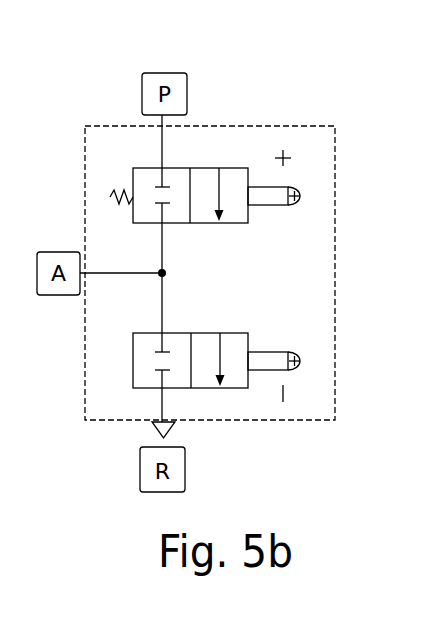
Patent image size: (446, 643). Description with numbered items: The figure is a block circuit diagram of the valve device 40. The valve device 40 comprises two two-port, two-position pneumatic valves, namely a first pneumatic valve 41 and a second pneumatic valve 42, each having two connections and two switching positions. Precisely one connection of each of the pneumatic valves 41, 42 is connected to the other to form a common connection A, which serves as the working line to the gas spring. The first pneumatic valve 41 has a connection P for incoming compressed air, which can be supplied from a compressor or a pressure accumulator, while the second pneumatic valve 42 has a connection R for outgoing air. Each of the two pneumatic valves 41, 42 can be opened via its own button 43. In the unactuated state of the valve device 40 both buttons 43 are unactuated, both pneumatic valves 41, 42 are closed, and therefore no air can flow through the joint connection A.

The valve device 40 is at (357, 162).
The first pneumatic valve 41 is at (207, 168).
The second pneumatic valve 42 is at (237, 388).
The button 43 is at (300, 196).